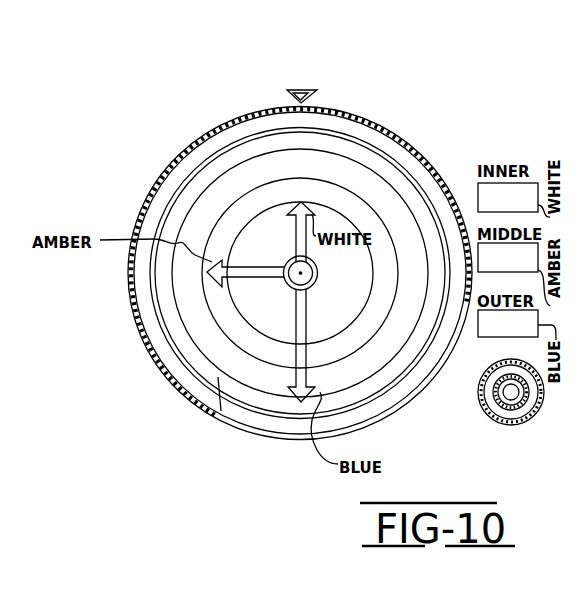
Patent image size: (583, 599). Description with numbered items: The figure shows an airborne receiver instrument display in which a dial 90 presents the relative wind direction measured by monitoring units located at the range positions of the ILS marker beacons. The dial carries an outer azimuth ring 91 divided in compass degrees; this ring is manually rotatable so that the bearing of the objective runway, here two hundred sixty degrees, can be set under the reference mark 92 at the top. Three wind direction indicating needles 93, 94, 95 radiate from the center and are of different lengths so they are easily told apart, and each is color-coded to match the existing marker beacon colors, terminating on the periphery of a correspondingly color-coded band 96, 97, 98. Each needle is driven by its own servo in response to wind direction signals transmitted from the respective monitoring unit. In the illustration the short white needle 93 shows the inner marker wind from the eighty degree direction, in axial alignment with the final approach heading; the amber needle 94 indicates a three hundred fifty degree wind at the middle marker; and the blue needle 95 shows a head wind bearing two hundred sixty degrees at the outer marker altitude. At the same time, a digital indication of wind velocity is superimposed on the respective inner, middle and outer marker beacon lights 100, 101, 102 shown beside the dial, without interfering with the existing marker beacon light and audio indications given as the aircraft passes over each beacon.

The dial 90 is at (364, 110).
The outer azimuth ring 91 is at (232, 132).
The reference mark 92 is at (300, 90).
The white needle 93 is at (292, 212).
The amber needle 94 is at (210, 274).
The blue needle 95 is at (290, 402).
The color-coded band 96 is at (347, 318).
The color-coded band 97 is at (374, 332).
The color-coded band 98 is at (220, 378).
The marker beacon light 100 is at (528, 190).
The marker beacon light 101 is at (487, 272).
The marker beacon light 102 is at (507, 337).